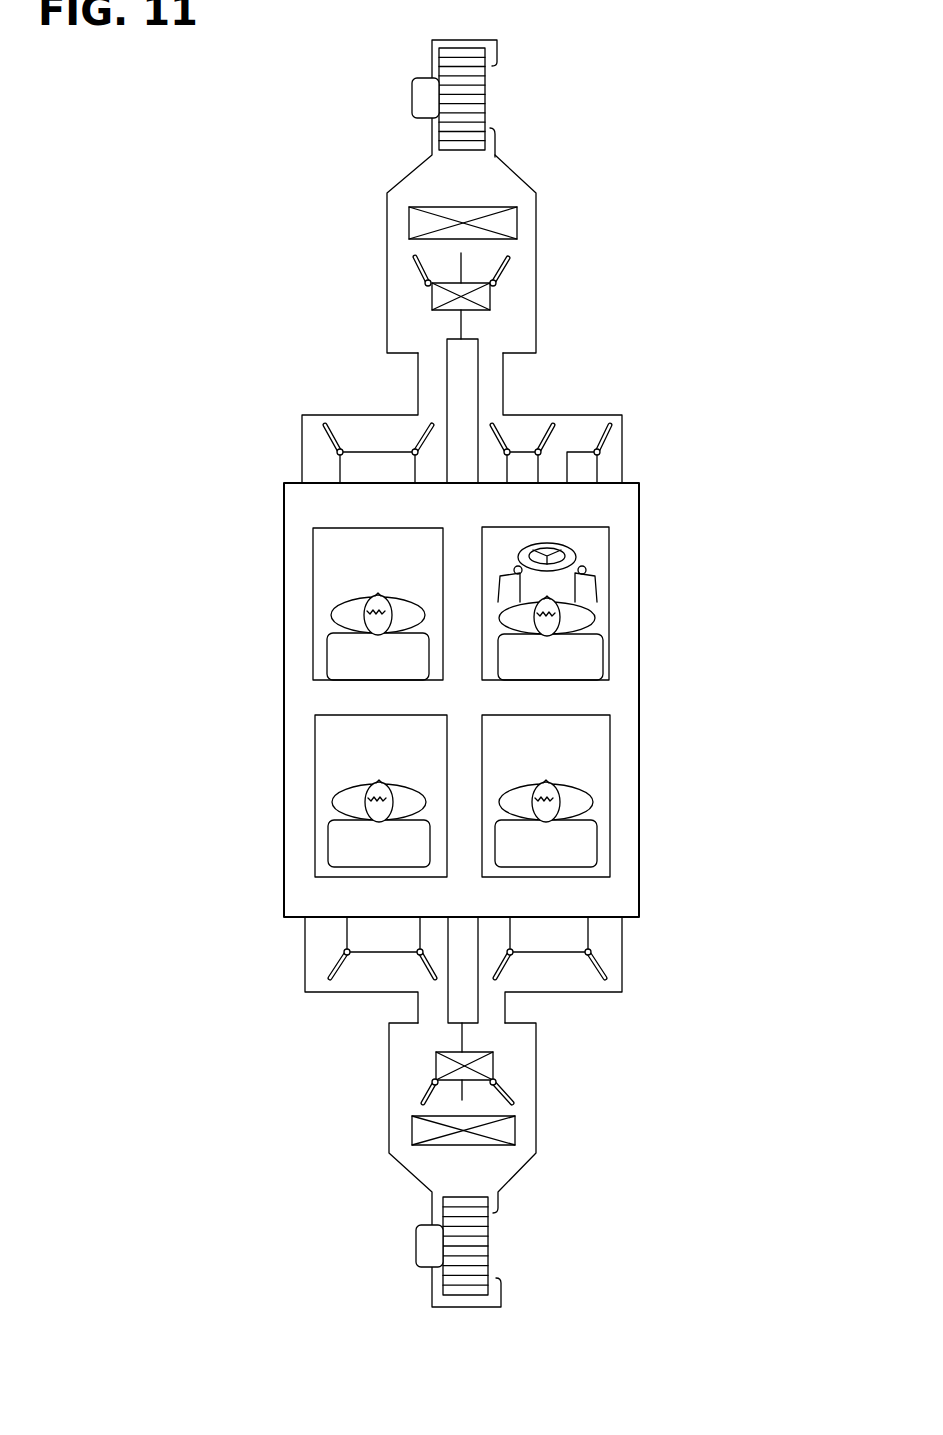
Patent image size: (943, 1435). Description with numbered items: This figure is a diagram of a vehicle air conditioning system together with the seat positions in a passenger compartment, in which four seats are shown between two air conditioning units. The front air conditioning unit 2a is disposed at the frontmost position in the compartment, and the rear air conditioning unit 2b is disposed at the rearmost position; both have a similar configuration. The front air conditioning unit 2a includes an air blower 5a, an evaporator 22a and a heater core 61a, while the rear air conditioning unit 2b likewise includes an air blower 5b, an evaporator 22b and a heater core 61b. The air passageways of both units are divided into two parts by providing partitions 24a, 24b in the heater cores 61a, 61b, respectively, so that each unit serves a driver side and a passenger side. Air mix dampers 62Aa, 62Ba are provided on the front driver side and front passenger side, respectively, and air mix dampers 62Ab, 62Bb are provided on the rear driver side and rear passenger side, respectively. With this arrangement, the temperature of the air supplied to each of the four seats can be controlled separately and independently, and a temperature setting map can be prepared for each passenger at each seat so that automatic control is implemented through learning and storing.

The front air conditioning unit 2a is at (515, 147).
The rear air conditioning unit 2b is at (532, 1183).
The air blower 5a is at (398, 97).
The air blower 5b is at (408, 1257).
The evaporator 22a is at (510, 220).
The evaporator 22b is at (510, 1128).
The partition 24a is at (463, 327).
The partition 24b is at (462, 1042).
The heater core 61a is at (433, 297).
The heater core 61b is at (487, 1067).
The air mix damper 62Aa is at (507, 270).
The air mix damper 62Ab is at (510, 1088).
The air mix damper 62Ba is at (415, 265).
The air mix damper 62Bb is at (423, 1090).